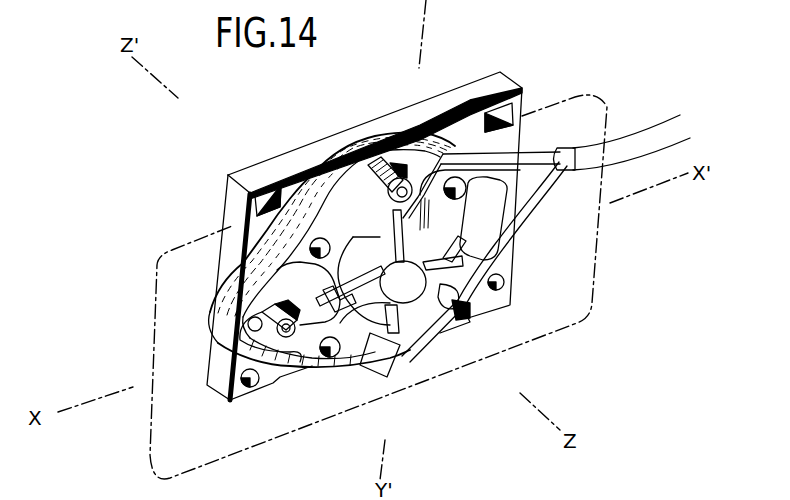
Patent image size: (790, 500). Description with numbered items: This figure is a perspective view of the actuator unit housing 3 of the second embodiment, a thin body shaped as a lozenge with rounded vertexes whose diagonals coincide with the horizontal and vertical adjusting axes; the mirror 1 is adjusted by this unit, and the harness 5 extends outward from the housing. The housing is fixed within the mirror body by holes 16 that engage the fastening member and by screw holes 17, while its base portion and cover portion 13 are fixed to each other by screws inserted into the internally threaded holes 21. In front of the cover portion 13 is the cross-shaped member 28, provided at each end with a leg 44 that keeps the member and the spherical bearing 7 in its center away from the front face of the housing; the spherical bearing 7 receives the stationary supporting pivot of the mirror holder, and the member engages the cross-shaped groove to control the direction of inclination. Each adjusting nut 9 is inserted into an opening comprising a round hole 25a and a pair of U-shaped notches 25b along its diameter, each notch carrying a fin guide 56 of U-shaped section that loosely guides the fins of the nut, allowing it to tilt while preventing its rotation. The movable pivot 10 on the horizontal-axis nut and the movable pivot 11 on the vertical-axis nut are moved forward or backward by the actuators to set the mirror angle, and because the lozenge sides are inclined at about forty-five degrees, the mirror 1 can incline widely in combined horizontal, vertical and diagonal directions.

The mirror 1 is at (184, 250).
The actuator unit housing 3 is at (516, 74).
The harness 5 is at (646, 140).
The spherical bearing 7 is at (418, 290).
The adjusting nut 9 is at (341, 211).
The movable pivot 10 is at (288, 337).
The movable pivot 11 is at (409, 192).
The cover portion 13 is at (347, 366).
The hole 16 is at (256, 203).
The screw hole 17 is at (250, 388).
The internally threaded hole 21 is at (327, 256).
The round hole 25a is at (383, 189).
The U-shaped notch 25b is at (312, 368).
The cross-shaped member 28 is at (450, 306).
The leg 44 is at (452, 242).
The fin guide 56 is at (390, 160).